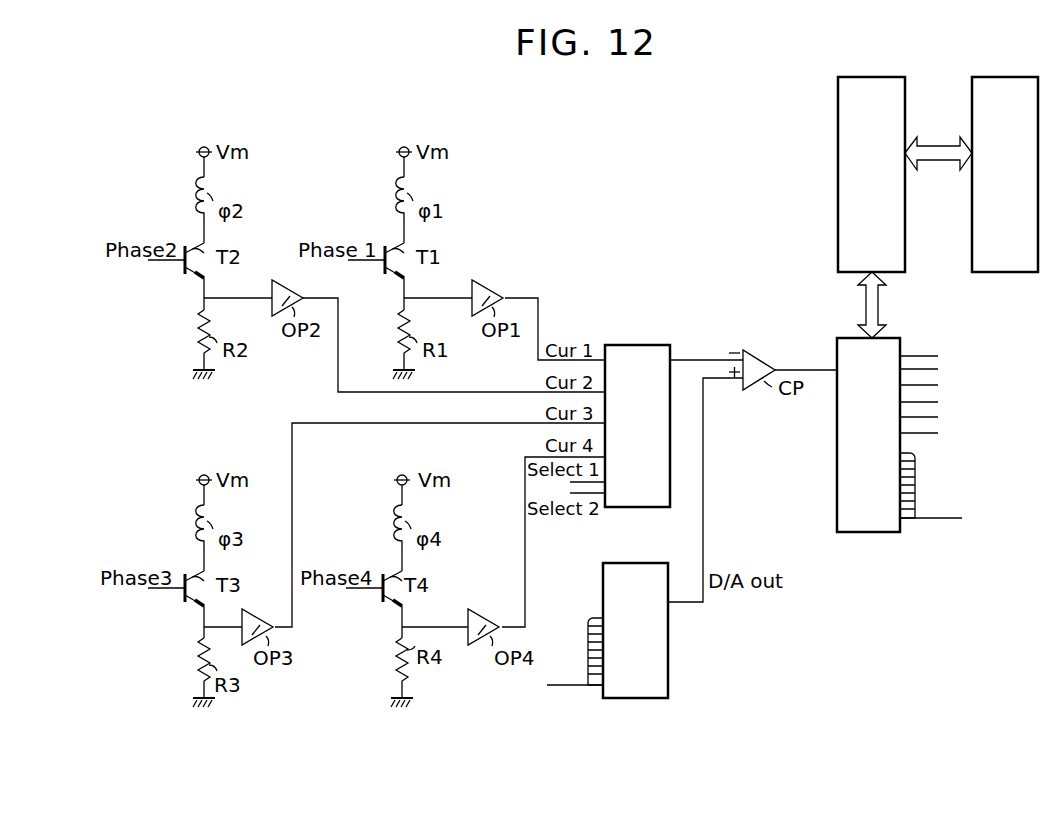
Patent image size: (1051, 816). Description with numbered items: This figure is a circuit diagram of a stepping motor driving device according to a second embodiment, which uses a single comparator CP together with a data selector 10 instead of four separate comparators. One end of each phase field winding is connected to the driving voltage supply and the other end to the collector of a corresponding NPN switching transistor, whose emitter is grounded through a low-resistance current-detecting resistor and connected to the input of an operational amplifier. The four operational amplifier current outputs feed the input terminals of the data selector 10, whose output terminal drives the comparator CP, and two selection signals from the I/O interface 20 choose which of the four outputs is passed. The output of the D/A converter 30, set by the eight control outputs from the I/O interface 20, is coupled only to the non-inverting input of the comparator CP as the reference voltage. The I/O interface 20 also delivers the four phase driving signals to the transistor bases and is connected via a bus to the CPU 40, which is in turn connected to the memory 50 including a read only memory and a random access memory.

The data selector 10 is at (646, 345).
The I/O interface 20 is at (879, 533).
The D/A converter 30 is at (668, 681).
The central processing unit 40 is at (838, 220).
The memory 50 is at (972, 220).